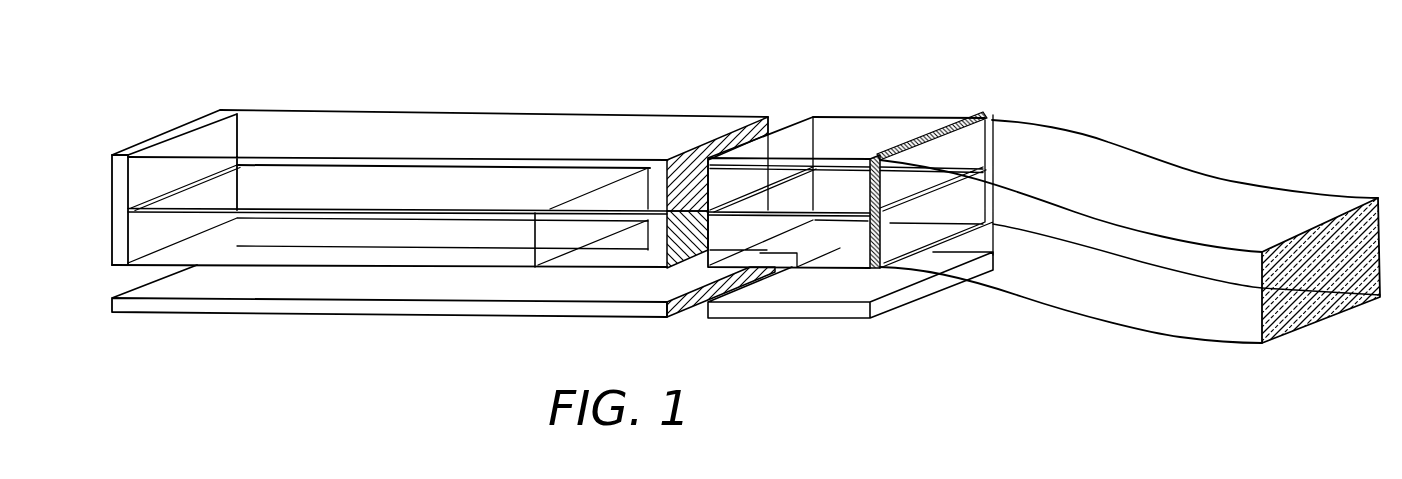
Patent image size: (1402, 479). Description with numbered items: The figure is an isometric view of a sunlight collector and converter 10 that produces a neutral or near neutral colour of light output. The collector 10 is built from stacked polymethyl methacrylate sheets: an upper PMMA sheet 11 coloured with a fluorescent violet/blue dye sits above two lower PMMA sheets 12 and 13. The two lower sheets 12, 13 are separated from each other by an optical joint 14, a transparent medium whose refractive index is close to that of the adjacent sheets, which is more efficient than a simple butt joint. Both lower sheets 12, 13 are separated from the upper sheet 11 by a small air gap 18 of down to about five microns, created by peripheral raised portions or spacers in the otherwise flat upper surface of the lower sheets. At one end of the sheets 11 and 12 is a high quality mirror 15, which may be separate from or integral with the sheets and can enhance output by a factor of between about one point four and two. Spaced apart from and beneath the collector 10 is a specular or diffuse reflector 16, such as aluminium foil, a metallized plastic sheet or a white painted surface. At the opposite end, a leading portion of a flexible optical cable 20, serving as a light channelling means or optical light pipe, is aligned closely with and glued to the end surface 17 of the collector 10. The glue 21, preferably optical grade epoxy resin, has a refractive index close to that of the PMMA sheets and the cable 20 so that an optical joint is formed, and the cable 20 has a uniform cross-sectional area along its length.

The sunlight collector and converter 10 is at (735, 90).
The upper PMMA sheet 11 is at (363, 128).
The lower PMMA sheet 12 is at (325, 257).
The lower PMMA sheet 13 is at (628, 257).
The optical joint 14 is at (535, 238).
The mirror 15 is at (118, 227).
The reflector 16 is at (400, 308).
The end surface 17 is at (870, 243).
The air gap 18 is at (265, 208).
The flexible optical cable 20 is at (1113, 300).
The glue 21 is at (987, 113).